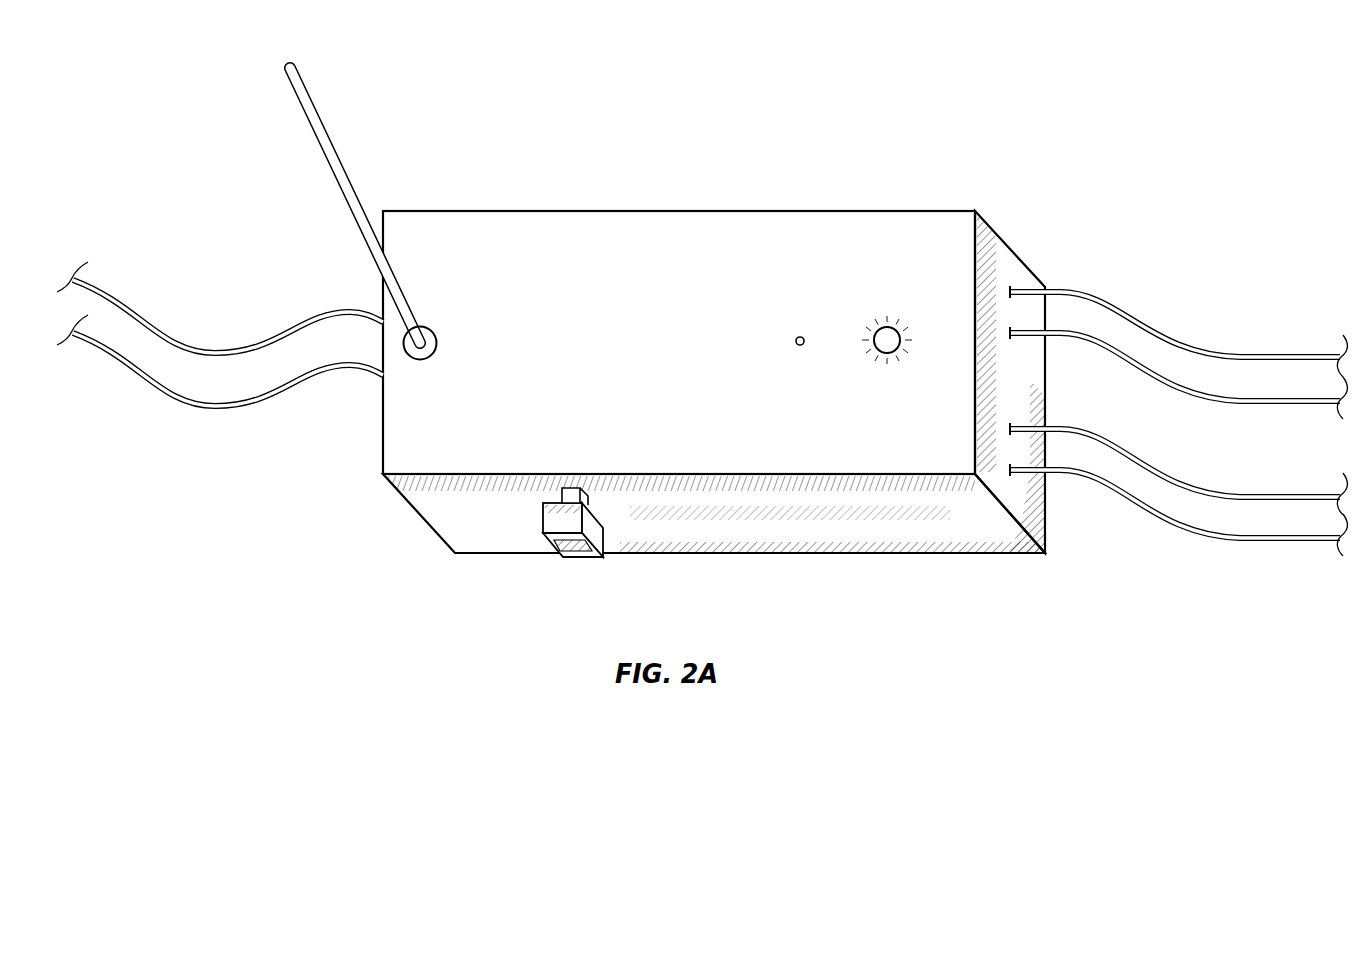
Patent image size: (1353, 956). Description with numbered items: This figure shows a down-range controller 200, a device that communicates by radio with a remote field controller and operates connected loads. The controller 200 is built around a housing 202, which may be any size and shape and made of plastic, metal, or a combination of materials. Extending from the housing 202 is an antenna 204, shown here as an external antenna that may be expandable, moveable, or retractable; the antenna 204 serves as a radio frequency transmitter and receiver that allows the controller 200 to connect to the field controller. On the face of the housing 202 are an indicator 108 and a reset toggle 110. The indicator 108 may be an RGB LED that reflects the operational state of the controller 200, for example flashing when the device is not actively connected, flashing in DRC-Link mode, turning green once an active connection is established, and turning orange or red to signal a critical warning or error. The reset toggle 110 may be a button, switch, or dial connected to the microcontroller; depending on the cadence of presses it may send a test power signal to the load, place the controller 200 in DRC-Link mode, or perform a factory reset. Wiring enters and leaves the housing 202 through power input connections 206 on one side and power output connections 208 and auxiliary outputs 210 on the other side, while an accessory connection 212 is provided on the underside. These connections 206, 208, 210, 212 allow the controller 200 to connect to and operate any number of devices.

The down-range controller (DRC) 200 is at (735, 330).
The housing 202 is at (1005, 537).
The antenna 204 is at (318, 112).
The power input connections 206 is at (193, 428).
The power output connections 208 is at (1208, 327).
The auxiliary outputs 210 is at (1208, 560).
The accessory connections 212 is at (530, 528).
The indicator 108 is at (878, 331).
The reset toggle 110 is at (796, 345).